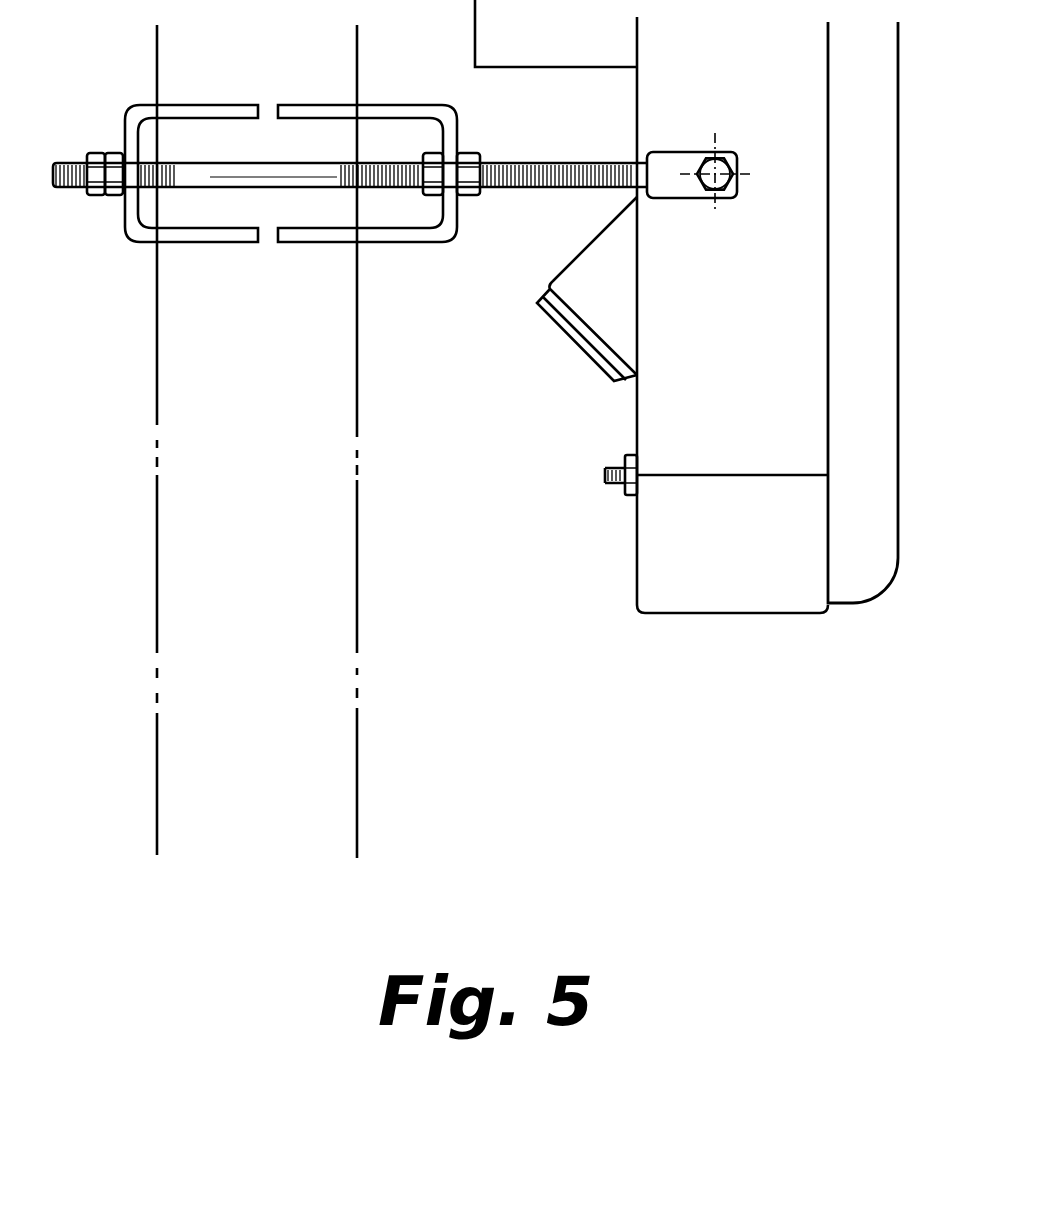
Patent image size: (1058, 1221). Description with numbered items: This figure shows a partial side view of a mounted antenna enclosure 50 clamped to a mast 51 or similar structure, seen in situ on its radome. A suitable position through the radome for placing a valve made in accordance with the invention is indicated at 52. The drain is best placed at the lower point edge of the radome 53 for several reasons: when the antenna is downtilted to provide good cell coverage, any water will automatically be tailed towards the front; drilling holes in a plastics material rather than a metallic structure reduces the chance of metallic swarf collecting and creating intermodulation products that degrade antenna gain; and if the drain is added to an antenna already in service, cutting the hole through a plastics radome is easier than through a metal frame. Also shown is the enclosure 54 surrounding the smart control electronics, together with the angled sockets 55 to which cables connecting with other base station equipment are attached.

The antenna enclosure 50 is at (592, 615).
The mast 51 is at (317, 397).
The valve position 52 is at (842, 603).
The radome 53 is at (888, 580).
The enclosure 54 is at (555, 50).
The angled sockets 55 is at (598, 363).